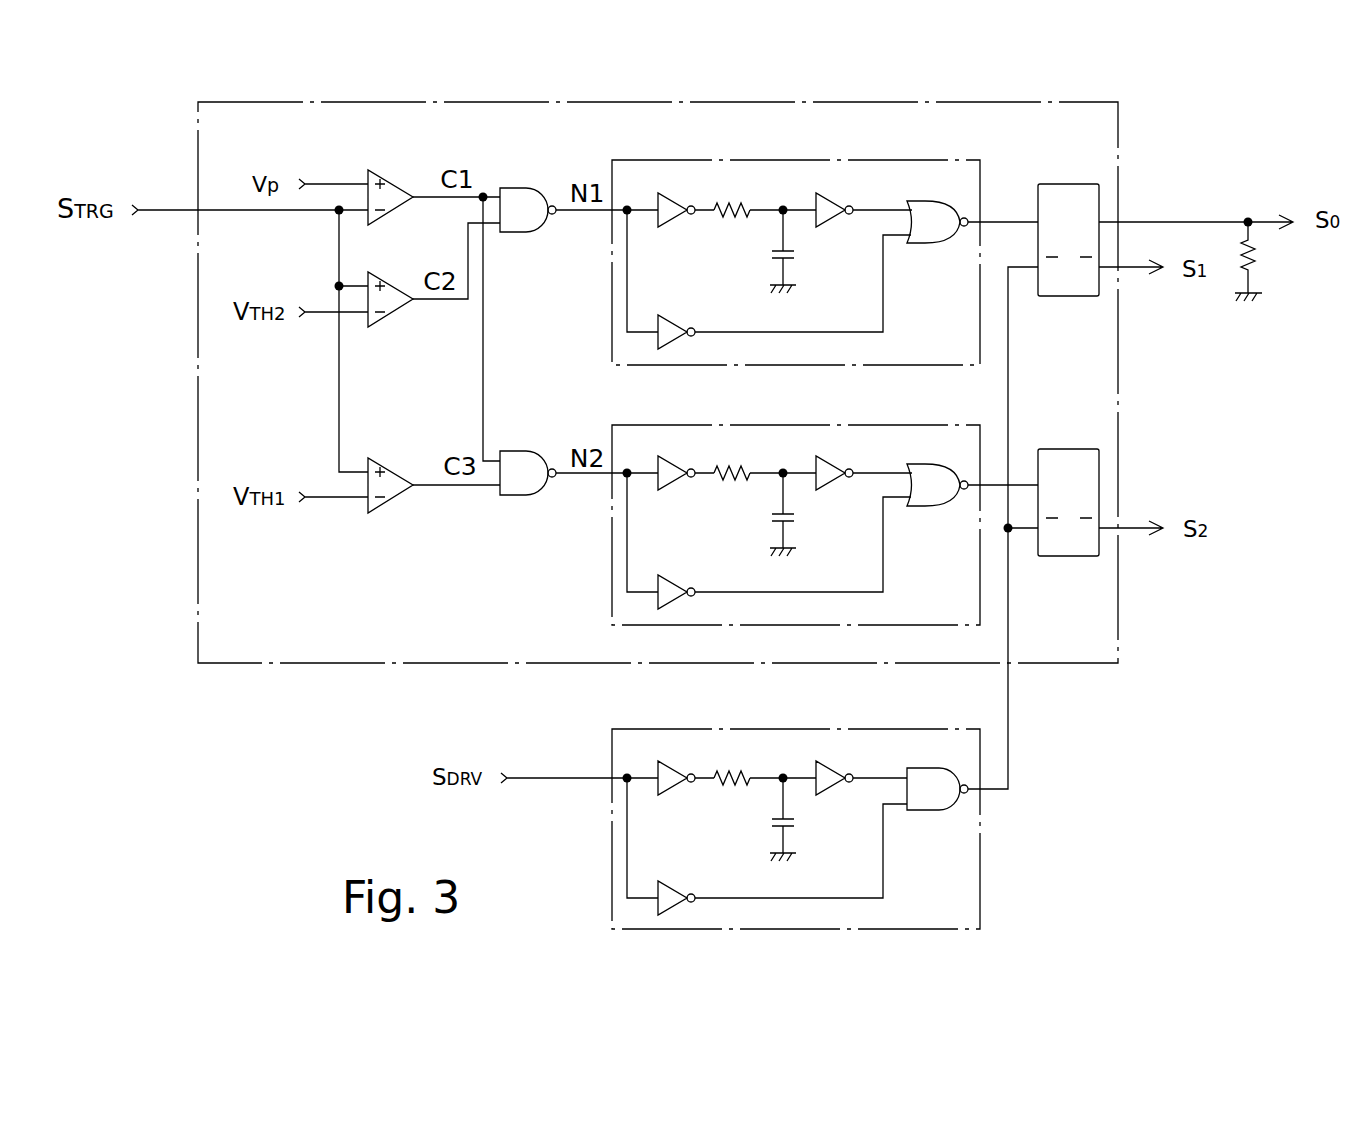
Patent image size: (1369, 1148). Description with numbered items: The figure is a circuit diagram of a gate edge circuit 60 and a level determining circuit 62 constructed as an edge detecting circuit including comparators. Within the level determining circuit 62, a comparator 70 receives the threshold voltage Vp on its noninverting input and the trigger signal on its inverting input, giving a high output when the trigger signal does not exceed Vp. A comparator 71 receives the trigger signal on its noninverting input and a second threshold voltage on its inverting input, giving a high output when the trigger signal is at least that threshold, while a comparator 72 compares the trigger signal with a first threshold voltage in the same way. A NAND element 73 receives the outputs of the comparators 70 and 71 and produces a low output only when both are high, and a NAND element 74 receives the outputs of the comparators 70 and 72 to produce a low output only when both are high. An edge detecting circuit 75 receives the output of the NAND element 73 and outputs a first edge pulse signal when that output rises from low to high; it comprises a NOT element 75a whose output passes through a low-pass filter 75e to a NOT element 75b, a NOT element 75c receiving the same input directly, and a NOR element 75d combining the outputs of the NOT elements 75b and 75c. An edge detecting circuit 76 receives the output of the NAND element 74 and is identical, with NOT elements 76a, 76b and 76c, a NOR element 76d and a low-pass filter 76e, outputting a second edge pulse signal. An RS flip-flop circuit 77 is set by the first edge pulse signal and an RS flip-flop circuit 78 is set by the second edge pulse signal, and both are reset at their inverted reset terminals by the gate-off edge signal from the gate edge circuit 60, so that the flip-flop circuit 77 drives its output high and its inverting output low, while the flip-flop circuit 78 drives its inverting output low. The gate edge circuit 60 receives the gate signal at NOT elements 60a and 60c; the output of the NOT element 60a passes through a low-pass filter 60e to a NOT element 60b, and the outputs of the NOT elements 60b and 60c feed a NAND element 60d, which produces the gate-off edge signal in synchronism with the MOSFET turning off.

The level determining circuit 62 is at (848, 102).
The comparator 70 is at (387, 170).
The comparator 71 is at (387, 272).
The comparator 72 is at (387, 458).
The NAND element 73 is at (520, 188).
The NAND element 74 is at (520, 451).
The edge detecting circuit 75 is at (827, 160).
The NOT element 75a is at (676, 196).
The NOT element 75b is at (837, 196).
The NOT element 75c is at (698, 317).
The NOR element 75d is at (933, 208).
The low-pass filter 75e is at (738, 193).
The edge detecting circuit 76 is at (848, 425).
The NOT element 76a is at (676, 462).
The NOT element 76b is at (849, 461).
The NOT element 76c is at (689, 581).
The NOR element 76d is at (938, 471).
The low-pass filter 76e is at (760, 457).
The RS flip-flop circuit 77 is at (1073, 184).
The RS flip-flop circuit 78 is at (1062, 449).
The gate edge circuit 60 is at (837, 729).
The NOT element 60a is at (689, 767).
The NOT element 60b is at (852, 767).
The NOT element 60c is at (696, 887).
The NAND element 60d is at (938, 773).
The low-pass filter 60e is at (760, 762).